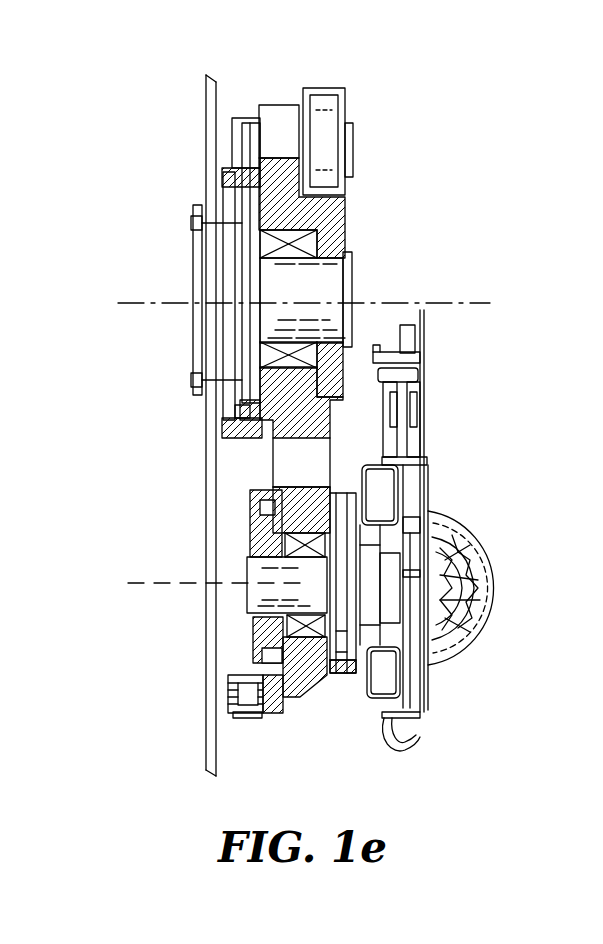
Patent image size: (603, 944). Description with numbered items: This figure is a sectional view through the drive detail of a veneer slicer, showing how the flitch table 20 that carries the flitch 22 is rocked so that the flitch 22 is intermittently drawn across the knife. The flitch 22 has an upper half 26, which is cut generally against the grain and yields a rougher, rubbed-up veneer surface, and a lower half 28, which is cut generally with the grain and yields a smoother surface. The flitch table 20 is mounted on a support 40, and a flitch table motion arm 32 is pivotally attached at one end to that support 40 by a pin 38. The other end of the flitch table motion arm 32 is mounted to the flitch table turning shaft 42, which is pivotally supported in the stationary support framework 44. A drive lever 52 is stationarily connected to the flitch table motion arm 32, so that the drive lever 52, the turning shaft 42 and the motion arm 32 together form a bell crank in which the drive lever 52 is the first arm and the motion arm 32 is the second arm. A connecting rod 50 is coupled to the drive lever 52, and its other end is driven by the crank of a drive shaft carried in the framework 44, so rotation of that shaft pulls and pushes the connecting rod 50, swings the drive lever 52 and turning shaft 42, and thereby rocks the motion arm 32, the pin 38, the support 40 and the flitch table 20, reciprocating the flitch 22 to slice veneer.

The flitch table 20 is at (462, 652).
The flitch 22 is at (467, 507).
The upper half 26 is at (494, 549).
The lower half 28 is at (500, 628).
The flitch table motion arm 32 is at (292, 462).
The pin 38 is at (255, 568).
The support 40 is at (370, 702).
The flitch table turning shaft 42 is at (330, 282).
The stationary support framework 44 is at (212, 523).
The connecting rod 50 is at (327, 95).
The drive lever 52 is at (277, 122).